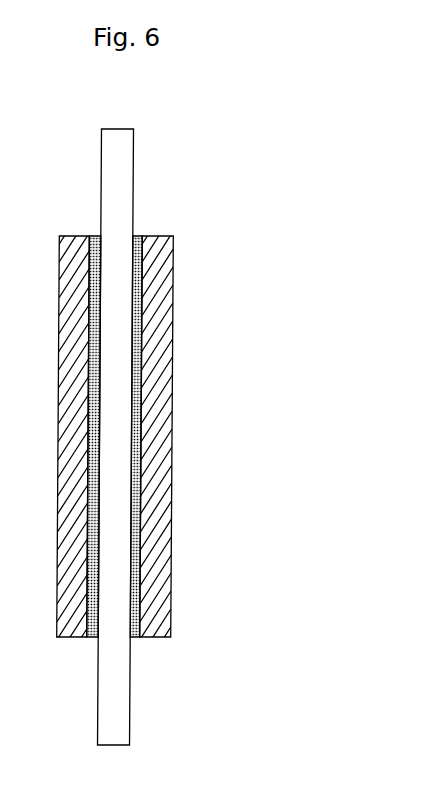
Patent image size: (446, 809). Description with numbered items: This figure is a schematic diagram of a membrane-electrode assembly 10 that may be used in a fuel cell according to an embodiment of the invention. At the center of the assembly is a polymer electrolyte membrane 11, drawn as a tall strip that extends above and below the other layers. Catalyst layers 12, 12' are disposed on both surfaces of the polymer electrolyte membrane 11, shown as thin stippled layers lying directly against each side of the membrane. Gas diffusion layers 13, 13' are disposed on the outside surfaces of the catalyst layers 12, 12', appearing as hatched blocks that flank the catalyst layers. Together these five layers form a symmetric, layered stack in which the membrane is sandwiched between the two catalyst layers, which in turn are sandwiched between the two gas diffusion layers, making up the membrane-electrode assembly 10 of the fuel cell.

The membrane-electrode assembly 10 is at (170, 124).
The polymer electrolyte membrane 11 is at (115, 129).
The catalyst layer 12 is at (77, 464).
The catalyst layer 12' is at (155, 464).
The gas diffusion layer 13 is at (49, 463).
The gas diffusion layer 13' is at (181, 462).